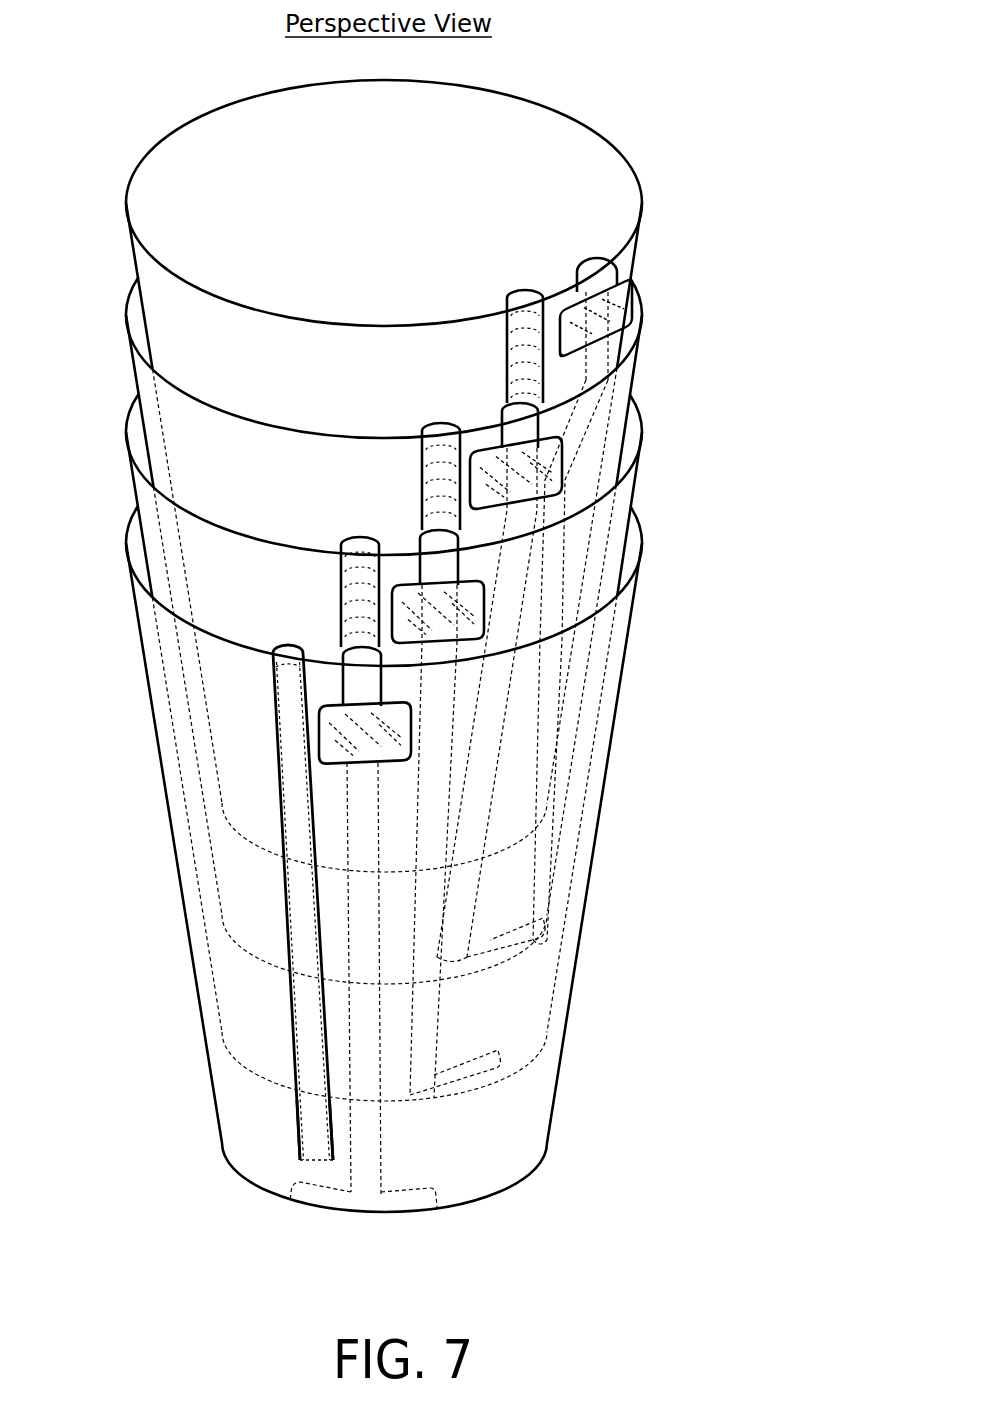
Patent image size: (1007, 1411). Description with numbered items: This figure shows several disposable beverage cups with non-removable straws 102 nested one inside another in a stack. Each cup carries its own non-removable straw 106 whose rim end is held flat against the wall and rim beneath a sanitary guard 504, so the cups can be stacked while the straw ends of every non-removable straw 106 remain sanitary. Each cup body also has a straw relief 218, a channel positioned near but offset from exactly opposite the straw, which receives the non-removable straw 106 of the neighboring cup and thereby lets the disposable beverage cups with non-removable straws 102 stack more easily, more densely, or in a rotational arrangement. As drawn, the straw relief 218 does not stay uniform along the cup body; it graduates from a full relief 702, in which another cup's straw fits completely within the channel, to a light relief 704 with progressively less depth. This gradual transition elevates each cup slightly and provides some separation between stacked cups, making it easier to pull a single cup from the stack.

The disposable beverage cup with non-removable straw 102 is at (712, 111).
The non-removable straw 106 is at (765, 369).
The straw relief 218 is at (279, 765).
The sanitary guard 504 is at (455, 603).
The full relief 702 is at (272, 662).
The light relief 704 is at (300, 1133).